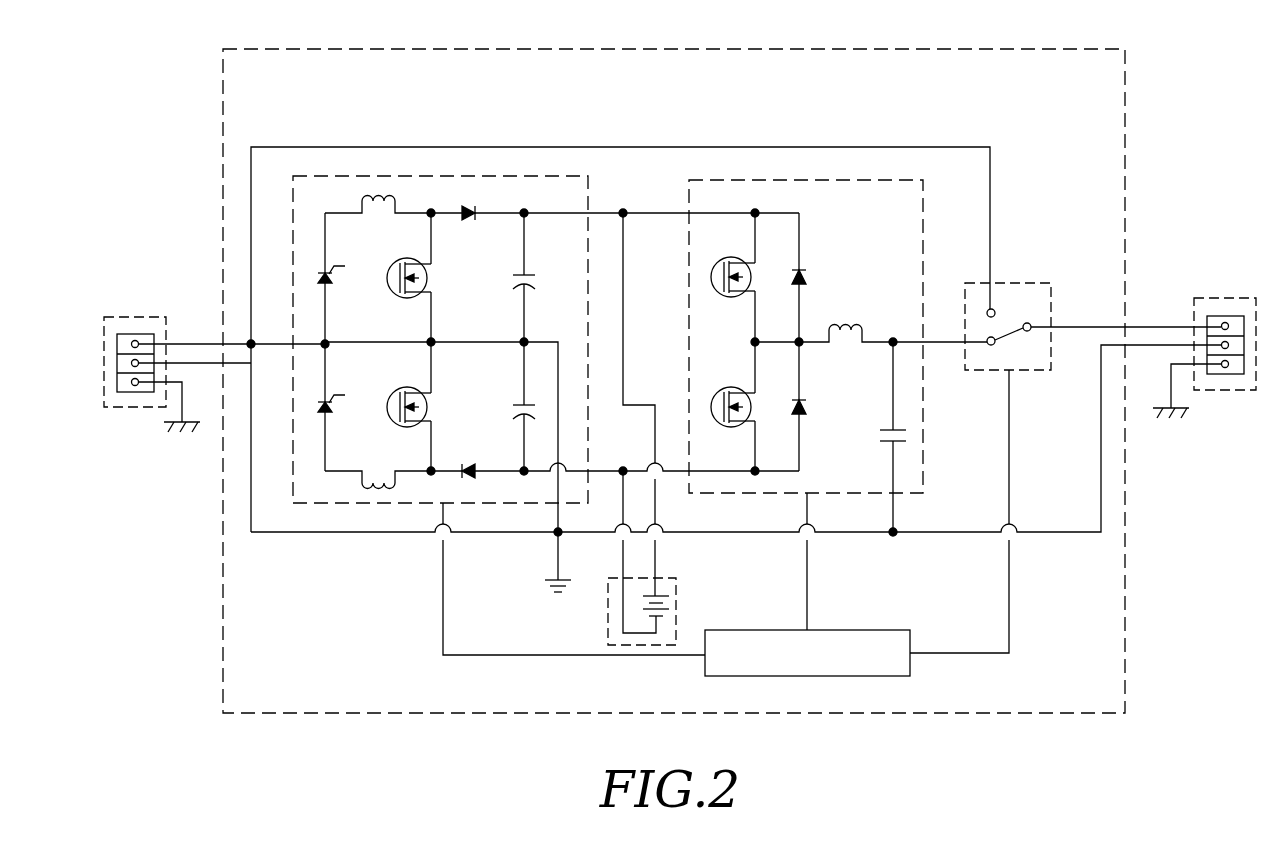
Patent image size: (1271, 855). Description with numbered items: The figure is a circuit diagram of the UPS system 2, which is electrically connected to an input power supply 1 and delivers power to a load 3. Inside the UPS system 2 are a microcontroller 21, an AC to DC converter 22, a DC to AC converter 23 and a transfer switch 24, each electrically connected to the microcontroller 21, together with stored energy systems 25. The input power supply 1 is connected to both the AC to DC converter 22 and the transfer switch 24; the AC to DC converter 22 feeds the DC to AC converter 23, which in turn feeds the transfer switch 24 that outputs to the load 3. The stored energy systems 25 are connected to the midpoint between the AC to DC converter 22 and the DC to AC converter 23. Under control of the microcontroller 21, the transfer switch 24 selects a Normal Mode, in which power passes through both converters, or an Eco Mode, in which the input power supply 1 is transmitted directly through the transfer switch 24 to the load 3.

The input power supply 1 is at (134, 317).
The UPS system 2 is at (1125, 576).
The load 3 is at (1225, 298).
The microcontroller 21 is at (862, 630).
The AC to DC converter 22 is at (440, 176).
The DC to AC converter 23 is at (820, 180).
The transfer switch 24 is at (1020, 283).
The stored energy systems 25 is at (680, 578).